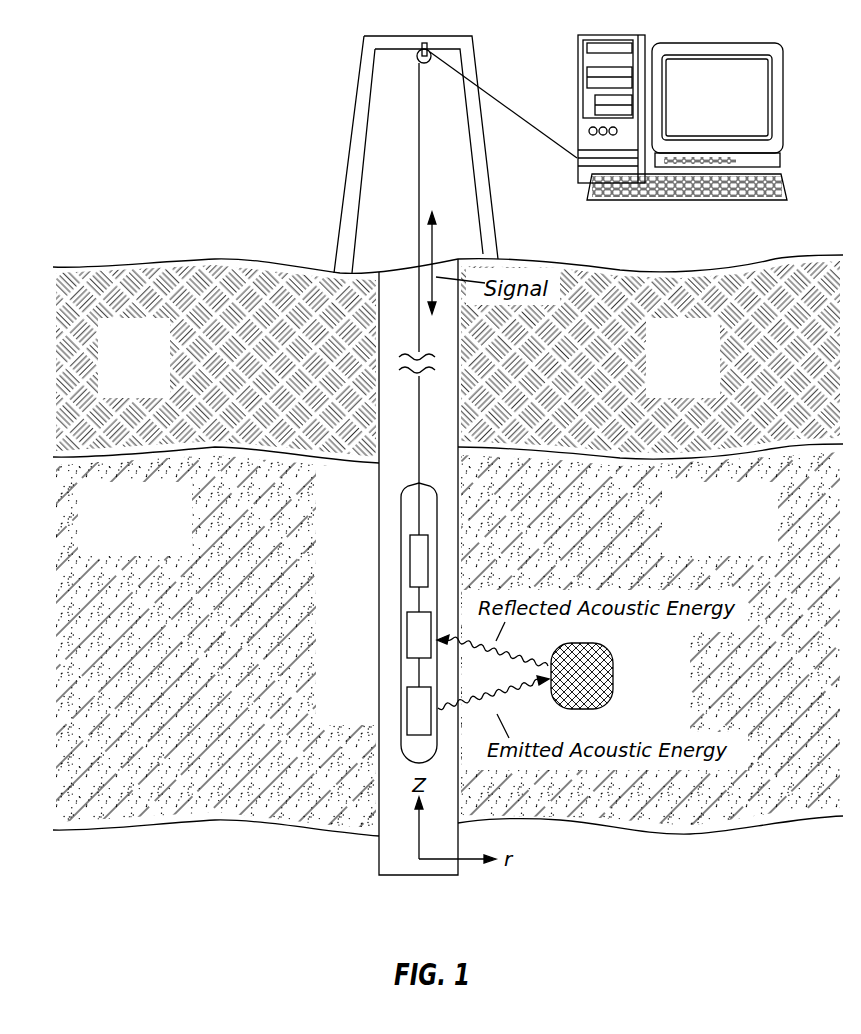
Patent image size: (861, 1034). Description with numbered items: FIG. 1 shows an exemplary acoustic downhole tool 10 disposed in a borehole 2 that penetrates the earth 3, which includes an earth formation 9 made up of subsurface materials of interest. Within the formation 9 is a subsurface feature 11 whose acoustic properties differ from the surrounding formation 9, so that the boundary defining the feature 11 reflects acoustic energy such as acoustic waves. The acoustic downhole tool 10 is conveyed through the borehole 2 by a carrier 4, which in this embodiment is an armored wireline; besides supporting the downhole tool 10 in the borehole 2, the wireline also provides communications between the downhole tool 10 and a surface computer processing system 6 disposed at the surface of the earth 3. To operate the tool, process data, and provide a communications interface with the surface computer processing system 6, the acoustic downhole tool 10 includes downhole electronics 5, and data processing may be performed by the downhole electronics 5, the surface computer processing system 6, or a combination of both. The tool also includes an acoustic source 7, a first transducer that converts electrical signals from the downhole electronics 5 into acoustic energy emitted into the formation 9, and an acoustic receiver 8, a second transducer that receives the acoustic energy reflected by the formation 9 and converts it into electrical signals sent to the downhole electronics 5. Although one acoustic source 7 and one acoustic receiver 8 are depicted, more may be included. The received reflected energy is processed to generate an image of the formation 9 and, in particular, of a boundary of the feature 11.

The borehole 2 is at (379, 313).
The earth 3 is at (690, 389).
The carrier 4 is at (418, 412).
The downhole electronics 5 is at (410, 560).
The surface computer processing system 6 is at (578, 52).
The acoustic source 7 is at (407, 703).
The acoustic receiver 8 is at (407, 627).
The earth formation 9 is at (727, 552).
The acoustic downhole tool 10 is at (401, 512).
The subsurface feature 11 is at (614, 676).